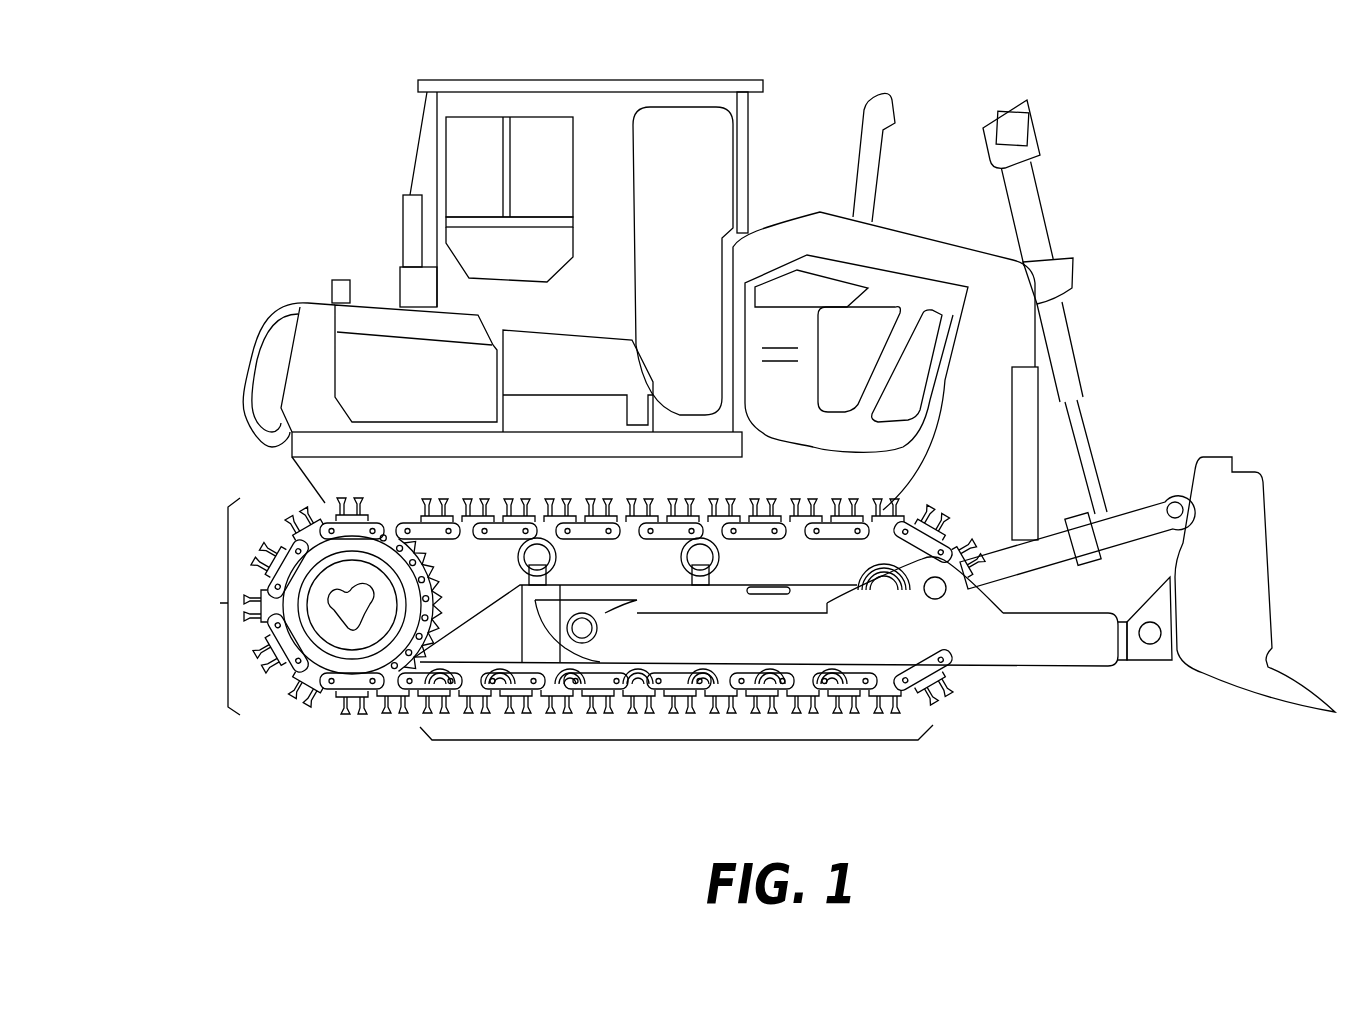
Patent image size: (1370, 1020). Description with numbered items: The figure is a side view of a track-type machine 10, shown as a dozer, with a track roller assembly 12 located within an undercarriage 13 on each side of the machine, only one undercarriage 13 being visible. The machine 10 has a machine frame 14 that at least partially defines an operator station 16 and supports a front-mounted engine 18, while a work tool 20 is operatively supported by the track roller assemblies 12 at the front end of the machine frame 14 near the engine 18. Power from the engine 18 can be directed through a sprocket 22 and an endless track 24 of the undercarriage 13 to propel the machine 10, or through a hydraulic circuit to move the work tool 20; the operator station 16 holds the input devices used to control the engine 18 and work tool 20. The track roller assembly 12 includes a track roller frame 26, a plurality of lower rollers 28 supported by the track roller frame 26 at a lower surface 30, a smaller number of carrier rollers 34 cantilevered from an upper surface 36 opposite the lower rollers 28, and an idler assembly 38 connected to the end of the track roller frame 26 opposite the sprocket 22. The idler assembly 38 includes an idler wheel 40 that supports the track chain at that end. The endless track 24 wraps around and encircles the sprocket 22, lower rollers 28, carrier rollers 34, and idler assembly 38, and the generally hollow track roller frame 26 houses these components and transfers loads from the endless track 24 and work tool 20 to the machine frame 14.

The track-type machine 10 is at (1192, 218).
The track roller assembly 12 is at (783, 741).
The undercarriage 13 is at (220, 603).
The machine frame 14 is at (343, 482).
The operator station 16 is at (703, 142).
The engine 18 is at (887, 317).
The work tool 20 is at (1232, 606).
The sprocket 22 is at (330, 632).
The endless track 24 is at (395, 708).
The track roller frame 26 is at (505, 643).
The lower rollers 28 is at (520, 682).
The lower surface 30 is at (531, 679).
The carrier rollers 34 is at (557, 543).
The upper surface 36 is at (627, 583).
The idler assembly 38 is at (855, 568).
The idler wheel 40 is at (884, 545).